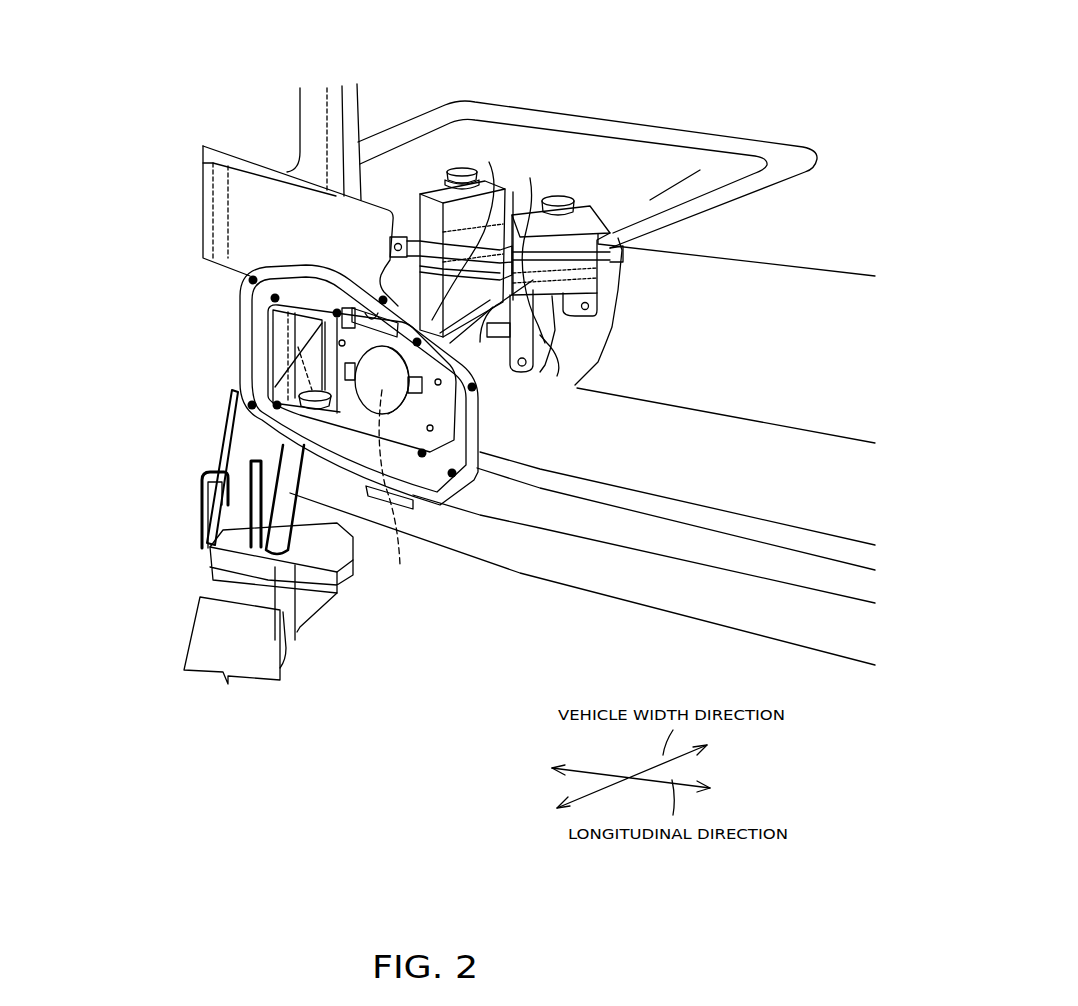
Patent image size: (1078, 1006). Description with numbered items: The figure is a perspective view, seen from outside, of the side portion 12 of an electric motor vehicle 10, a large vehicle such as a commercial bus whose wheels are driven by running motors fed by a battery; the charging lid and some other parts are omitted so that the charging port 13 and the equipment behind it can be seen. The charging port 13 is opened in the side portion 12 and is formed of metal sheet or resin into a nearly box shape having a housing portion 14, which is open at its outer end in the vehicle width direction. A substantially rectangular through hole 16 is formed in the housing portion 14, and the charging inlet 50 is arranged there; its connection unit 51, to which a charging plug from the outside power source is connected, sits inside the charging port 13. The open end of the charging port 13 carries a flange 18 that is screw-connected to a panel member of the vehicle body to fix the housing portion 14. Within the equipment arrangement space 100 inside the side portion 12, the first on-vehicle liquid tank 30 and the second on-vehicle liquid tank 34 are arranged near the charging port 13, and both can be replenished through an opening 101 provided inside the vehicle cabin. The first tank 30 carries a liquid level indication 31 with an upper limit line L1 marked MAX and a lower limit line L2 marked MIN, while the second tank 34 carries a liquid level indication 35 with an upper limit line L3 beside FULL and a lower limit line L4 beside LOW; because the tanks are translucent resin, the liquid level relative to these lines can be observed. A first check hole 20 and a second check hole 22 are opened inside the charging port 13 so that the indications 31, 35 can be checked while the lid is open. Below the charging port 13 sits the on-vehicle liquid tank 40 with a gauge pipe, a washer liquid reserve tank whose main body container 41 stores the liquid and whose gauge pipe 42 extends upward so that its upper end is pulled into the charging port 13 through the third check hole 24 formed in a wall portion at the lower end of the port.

The electric motor vehicle 10 is at (708, 74).
The side portion 12 is at (775, 405).
The charging port 13 is at (313, 346).
The housing portion 14 is at (262, 336).
The through hole 16 is at (297, 457).
The flange 18 is at (472, 417).
The first check hole 20 is at (356, 332).
The second check hole 22 is at (458, 432).
The third check hole 24 is at (267, 423).
The first on-vehicle liquid tank 30 is at (439, 188).
The liquid level indication 31 is at (428, 227).
The second on-vehicle liquid tank 34 is at (592, 211).
The liquid level indication 35 is at (605, 272).
The on-vehicle liquid tank with gauge pipe 40 is at (268, 598).
The main body container 41 is at (241, 652).
The gauge pipe 42 is at (290, 445).
The charging inlet 50 is at (416, 508).
The connection unit 51 is at (394, 493).
The equipment arrangement space 100 is at (574, 157).
The opening 101 is at (677, 196).
The upper limit line L1 is at (466, 230).
The lower limit line L2 is at (500, 324).
The upper limit line L3 is at (531, 250).
The lower limit line L4 is at (553, 366).